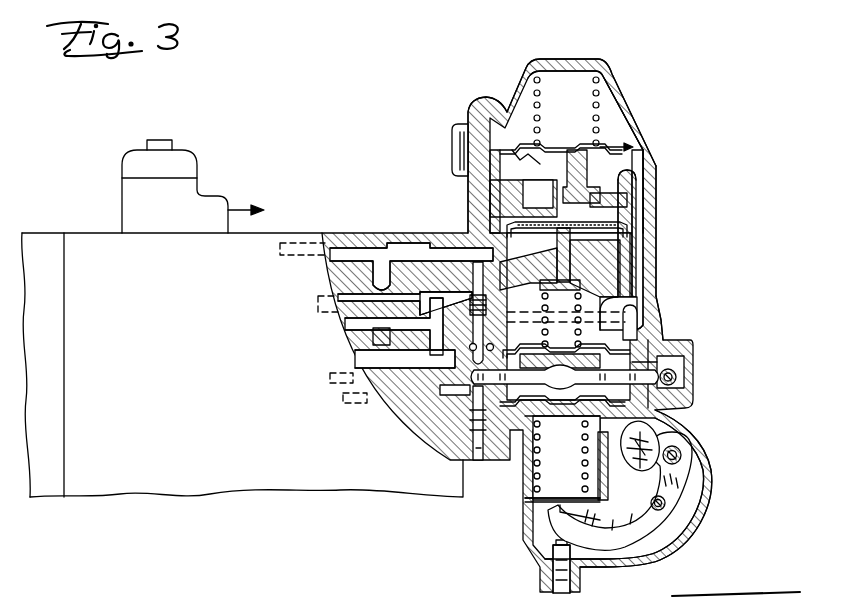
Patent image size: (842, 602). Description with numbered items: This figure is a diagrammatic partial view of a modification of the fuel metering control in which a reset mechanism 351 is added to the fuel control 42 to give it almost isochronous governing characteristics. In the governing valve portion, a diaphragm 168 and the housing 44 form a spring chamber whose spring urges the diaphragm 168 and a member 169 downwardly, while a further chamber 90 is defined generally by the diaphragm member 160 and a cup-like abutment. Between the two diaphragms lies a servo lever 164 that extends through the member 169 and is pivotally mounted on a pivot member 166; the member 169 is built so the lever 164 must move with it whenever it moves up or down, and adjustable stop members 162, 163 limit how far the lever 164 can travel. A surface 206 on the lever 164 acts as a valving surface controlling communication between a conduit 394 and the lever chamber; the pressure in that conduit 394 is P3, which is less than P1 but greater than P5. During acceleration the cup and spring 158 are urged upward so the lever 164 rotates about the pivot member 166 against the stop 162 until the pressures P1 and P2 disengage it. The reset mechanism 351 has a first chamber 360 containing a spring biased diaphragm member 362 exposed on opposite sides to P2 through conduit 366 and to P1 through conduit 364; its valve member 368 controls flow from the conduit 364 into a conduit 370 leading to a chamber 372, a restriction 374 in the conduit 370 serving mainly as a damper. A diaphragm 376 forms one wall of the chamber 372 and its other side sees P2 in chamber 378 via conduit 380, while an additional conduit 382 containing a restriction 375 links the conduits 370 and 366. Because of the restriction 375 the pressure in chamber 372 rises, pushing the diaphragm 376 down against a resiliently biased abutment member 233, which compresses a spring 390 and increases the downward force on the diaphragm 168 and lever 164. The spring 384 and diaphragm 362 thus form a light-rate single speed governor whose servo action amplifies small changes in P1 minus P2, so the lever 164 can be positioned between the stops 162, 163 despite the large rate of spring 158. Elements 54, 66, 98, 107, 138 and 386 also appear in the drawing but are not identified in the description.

The fuel control 42 is at (216, 150).
The housing 44 is at (260, 230).
The outlet direction 54 is at (423, 500).
The passage 66 is at (400, 349).
The chamber 90 is at (572, 490).
The passage 98 is at (408, 234).
The port 107 is at (661, 322).
The inlet passage 138 is at (236, 206).
The spring 158 is at (572, 484).
The diaphragm member 160 is at (530, 390).
The adjustable stop member 162 is at (492, 302).
The adjustable stop member 163 is at (490, 460).
The lever 164 is at (503, 349).
The pivot member 166 is at (678, 377).
The diaphragm 168 is at (657, 357).
The member 169 is at (566, 459).
The valving surface 206 is at (660, 392).
The resiliently biased abutment member 233 is at (628, 270).
The reset mechanism 351 is at (470, 76).
The first chamber 360 is at (575, 76).
The spring biased diaphragm member 362 is at (622, 152).
The conduit 364 is at (658, 172).
The conduit 366 is at (472, 126).
The valve member 368 is at (592, 146).
The conduit 370 is at (572, 146).
The chamber 372 is at (655, 210).
The restriction 374 is at (650, 193).
The restriction 375 is at (484, 174).
The diaphragm 376 is at (642, 232).
The chamber 378 is at (652, 252).
The conduit 380 is at (478, 228).
The additional conduit 382 is at (462, 138).
The spring 384 is at (610, 84).
The valve member 386 is at (510, 178).
The spring 390 is at (658, 293).
The conduit 394 is at (347, 318).
The pressure P1 is at (640, 158).
The pressure P2 is at (548, 90).
The pressure P3 is at (665, 338).
The pressure P5 is at (656, 412).